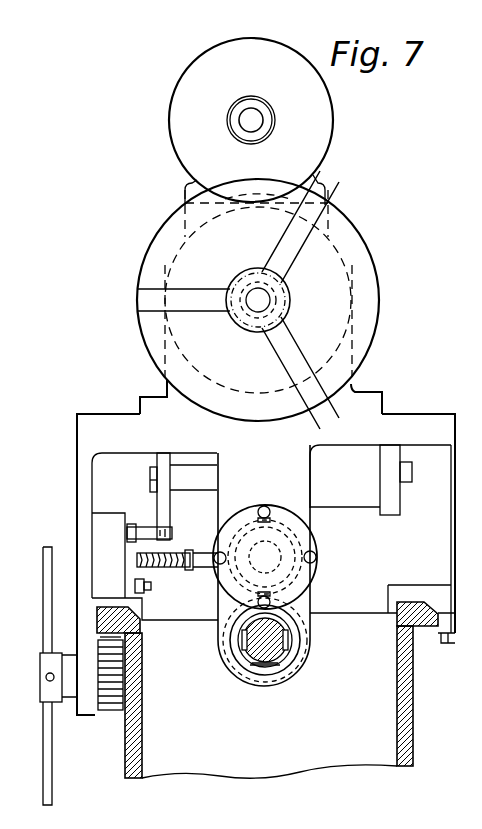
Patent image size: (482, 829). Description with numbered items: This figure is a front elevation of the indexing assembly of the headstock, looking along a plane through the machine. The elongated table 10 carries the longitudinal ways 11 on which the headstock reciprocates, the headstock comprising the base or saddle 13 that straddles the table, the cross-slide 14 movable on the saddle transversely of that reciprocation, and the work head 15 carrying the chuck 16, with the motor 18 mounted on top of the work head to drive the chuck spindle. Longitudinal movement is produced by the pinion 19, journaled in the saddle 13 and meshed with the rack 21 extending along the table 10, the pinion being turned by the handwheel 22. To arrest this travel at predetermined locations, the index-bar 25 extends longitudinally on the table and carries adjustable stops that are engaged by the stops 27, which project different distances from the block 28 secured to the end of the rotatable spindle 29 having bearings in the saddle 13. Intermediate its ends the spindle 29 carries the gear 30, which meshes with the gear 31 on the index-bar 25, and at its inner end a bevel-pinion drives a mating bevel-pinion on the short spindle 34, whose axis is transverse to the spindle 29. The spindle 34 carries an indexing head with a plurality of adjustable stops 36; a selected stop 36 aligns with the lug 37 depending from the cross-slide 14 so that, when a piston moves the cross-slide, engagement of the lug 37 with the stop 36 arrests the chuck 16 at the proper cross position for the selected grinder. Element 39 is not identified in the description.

The table 10 is at (405, 724).
The longitudinal ways 11 is at (422, 632).
The base or saddle 13 is at (77, 470).
The cross-slide 14 is at (152, 408).
The work head 15 is at (345, 267).
The chuck 16 is at (165, 244).
The motor 18 is at (180, 110).
The pinion 19 is at (110, 712).
The rack 21 is at (125, 642).
The handwheel 22 is at (43, 585).
The index-bar 25 is at (280, 640).
The stops 27 is at (228, 554).
The block 28 is at (318, 566).
The rotatable spindle 29 is at (272, 543).
The gear 30 is at (296, 585).
The gear 31 is at (298, 665).
The short spindle 34 is at (200, 568).
The adjustable stops 36 is at (141, 588).
The lug 37 is at (160, 512).
The block 39 is at (352, 507).